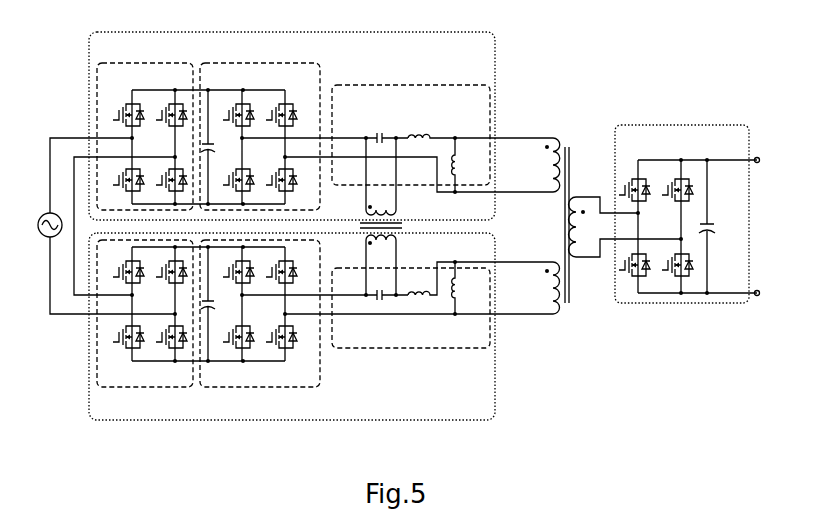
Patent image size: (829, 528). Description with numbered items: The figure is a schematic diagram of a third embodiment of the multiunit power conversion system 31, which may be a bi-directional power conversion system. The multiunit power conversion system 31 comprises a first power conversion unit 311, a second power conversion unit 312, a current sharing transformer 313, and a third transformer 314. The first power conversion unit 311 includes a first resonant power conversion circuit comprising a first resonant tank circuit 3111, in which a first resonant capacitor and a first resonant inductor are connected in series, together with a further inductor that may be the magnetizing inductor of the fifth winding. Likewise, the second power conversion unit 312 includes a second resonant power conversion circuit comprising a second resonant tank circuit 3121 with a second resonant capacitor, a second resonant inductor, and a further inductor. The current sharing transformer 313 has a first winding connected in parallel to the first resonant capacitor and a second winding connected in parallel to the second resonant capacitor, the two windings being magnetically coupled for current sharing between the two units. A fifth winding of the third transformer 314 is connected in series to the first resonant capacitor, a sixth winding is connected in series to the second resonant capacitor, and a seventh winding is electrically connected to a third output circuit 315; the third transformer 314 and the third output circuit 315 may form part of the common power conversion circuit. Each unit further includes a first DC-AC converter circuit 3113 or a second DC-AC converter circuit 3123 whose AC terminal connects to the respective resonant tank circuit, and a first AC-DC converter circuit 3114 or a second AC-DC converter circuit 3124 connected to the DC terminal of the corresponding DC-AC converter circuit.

The multiunit power conversion system 31 is at (122, 26).
The first power conversion unit 311 is at (292, 126).
The second power conversion unit 312 is at (292, 326).
The first resonant tank circuit 3111 is at (397, 139).
The first DC-AC converter circuit 3113 is at (313, 64).
The first AC-DC converter circuit 3114 is at (108, 62).
The second resonant tank circuit 3121 is at (397, 304).
The second DC-AC converter circuit 3123 is at (313, 387).
The second AC-DC converter circuit 3124 is at (97, 389).
The current sharing transformer 313 is at (405, 227).
The third transformer 314 is at (567, 303).
The third output circuit 315 is at (687, 214).